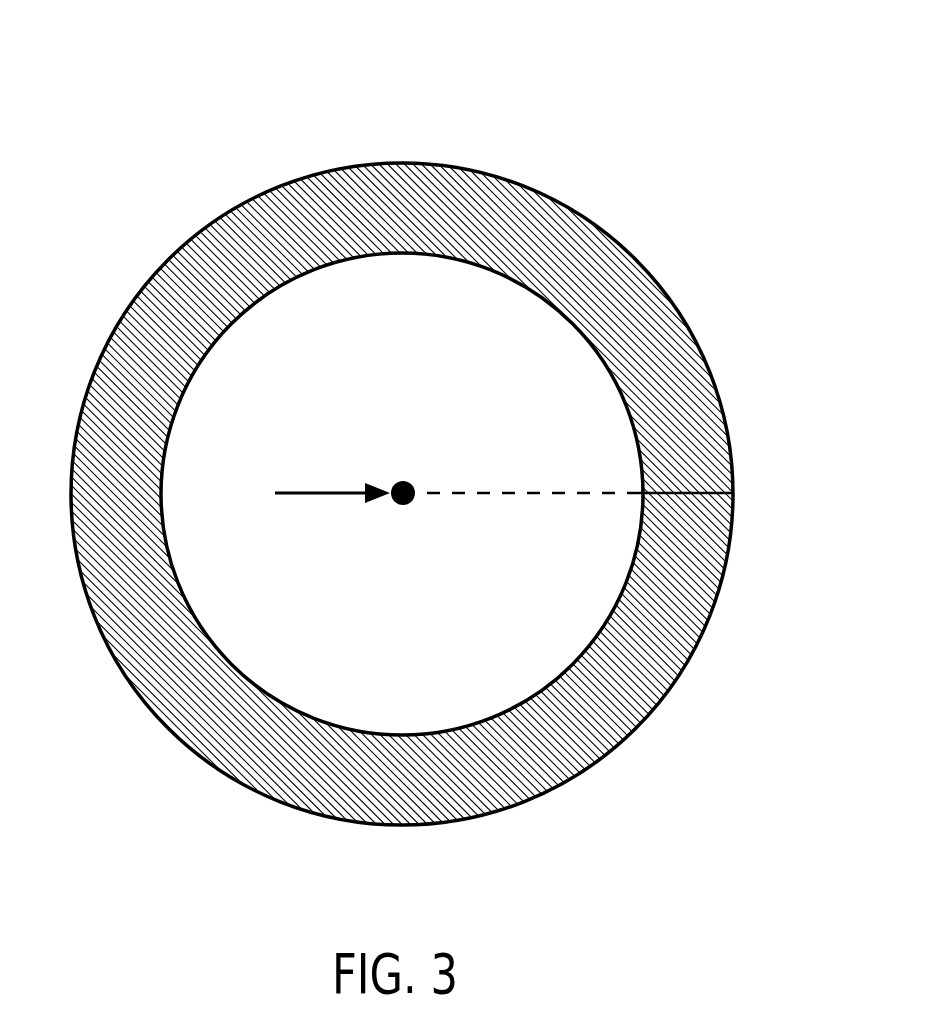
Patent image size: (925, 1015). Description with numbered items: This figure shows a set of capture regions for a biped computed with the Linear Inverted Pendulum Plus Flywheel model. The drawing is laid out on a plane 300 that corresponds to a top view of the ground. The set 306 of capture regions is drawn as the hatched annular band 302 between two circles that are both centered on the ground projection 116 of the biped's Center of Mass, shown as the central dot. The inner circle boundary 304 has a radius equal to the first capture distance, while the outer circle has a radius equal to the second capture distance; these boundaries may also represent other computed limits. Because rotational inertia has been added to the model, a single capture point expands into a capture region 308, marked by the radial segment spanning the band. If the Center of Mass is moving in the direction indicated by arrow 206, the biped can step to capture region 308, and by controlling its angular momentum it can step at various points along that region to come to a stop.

The plane 300 is at (106, 64).
The conduit wall (hatched annulus) 302 is at (587, 255).
The inner circle boundary 304 is at (590, 318).
The set of capture regions 306 is at (682, 318).
The capture region 308 is at (685, 490).
The arrow 206 is at (322, 492).
The ground projection of the Center of Mass 116 is at (398, 505).